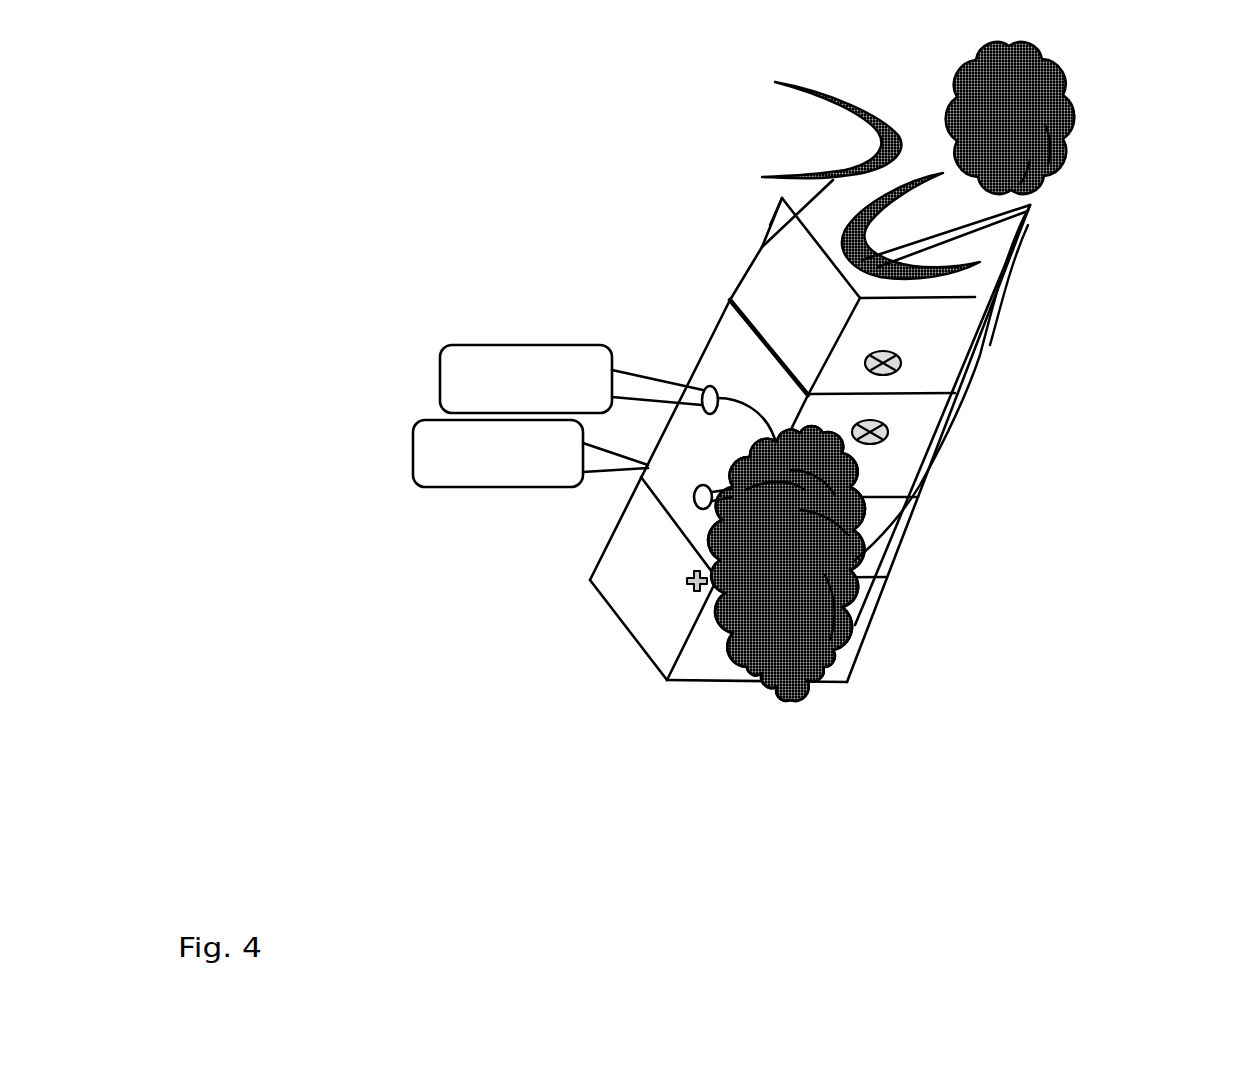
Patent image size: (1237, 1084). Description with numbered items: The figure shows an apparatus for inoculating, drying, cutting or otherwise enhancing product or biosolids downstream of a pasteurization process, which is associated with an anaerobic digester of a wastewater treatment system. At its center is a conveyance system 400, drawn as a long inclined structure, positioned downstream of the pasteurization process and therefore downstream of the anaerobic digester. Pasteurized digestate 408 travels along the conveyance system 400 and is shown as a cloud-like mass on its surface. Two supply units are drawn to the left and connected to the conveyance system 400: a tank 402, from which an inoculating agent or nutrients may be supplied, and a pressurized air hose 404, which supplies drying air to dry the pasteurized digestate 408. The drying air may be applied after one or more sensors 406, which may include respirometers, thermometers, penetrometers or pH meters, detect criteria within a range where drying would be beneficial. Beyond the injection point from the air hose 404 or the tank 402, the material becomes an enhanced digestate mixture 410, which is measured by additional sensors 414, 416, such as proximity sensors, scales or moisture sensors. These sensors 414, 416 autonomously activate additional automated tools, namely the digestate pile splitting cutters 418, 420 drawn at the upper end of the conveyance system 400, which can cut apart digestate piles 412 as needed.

The conveyance system 400 is at (748, 372).
The tank 402 is at (447, 348).
The pressurized air hose 404 is at (547, 487).
The sensors 406 is at (680, 585).
The pasteurized digestate 408 is at (760, 667).
The enhanced digestate mixture 410 is at (888, 430).
The digestate piles 412 is at (1068, 143).
The sensor 414 is at (903, 364).
The sensor 416 is at (995, 315).
The digestate pile splitting cutter 418 is at (1040, 205).
The digestate pile splitting cutter 420 is at (780, 196).